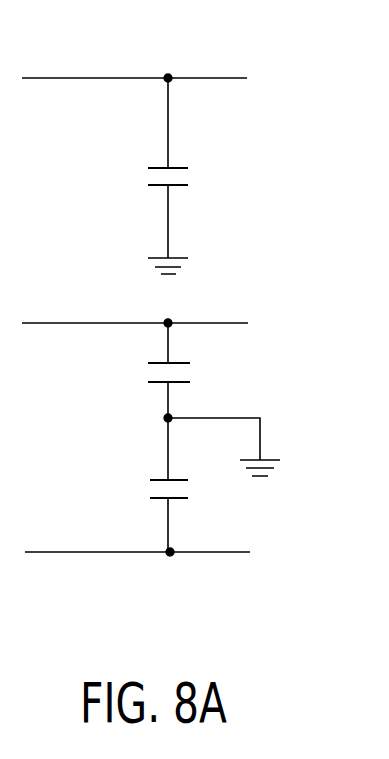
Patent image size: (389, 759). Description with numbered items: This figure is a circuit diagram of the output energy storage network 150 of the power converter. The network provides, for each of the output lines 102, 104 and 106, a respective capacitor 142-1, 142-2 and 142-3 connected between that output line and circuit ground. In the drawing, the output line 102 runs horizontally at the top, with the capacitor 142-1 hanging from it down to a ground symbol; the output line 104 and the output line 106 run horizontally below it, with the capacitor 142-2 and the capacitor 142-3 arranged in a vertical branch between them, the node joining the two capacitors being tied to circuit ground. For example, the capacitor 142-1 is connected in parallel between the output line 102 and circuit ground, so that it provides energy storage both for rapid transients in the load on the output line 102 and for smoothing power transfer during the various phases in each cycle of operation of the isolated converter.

The output energy storage network 150 is at (278, 163).
The output line 102 is at (48, 78).
The output line 104 is at (50, 323).
The output line 106 is at (72, 552).
The capacitor 142-1 is at (148, 185).
The capacitor 142-2 is at (148, 382).
The capacitor 142-3 is at (150, 498).